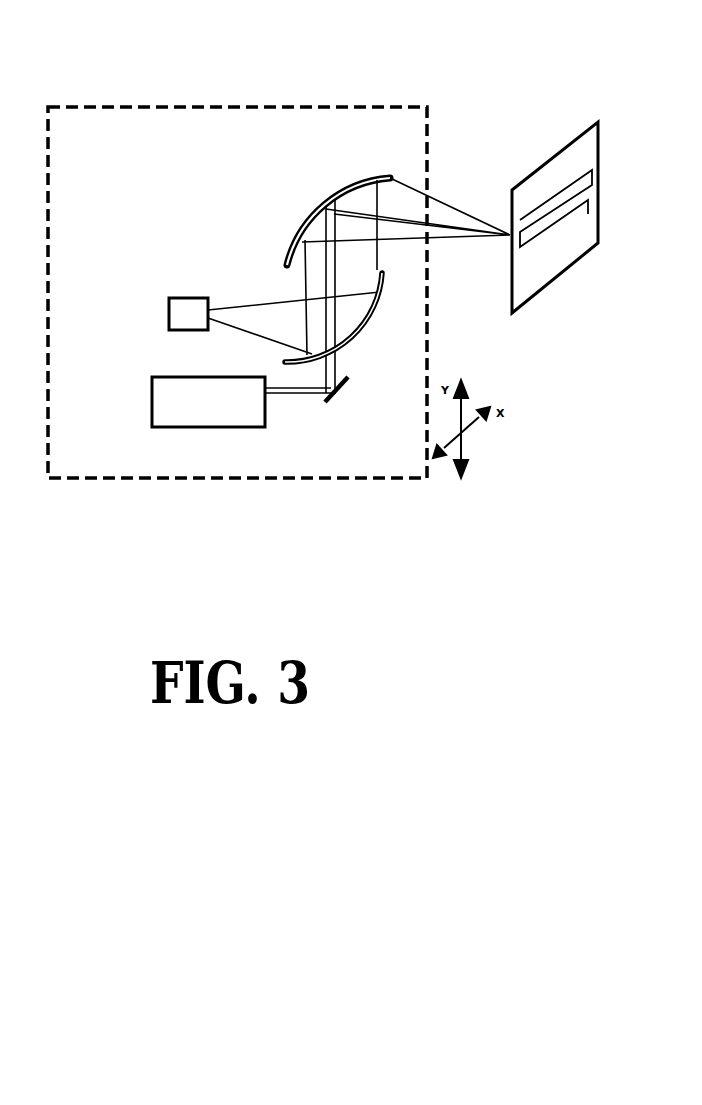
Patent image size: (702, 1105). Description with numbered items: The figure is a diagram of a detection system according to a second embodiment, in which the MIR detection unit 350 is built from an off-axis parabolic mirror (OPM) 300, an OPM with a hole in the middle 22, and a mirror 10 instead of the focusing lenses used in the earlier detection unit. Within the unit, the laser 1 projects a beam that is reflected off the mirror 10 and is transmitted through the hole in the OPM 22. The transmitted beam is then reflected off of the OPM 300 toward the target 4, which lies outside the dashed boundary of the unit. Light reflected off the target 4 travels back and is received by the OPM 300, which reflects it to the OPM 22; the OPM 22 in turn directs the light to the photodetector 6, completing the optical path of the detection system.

The MIR detection unit 350 is at (343, 106).
The off-axis parabolic mirror 300 is at (388, 178).
The target 4 is at (555, 217).
The photodetector 6 is at (188, 314).
The laser 1 is at (208, 402).
The OPM with a hole in the middle 22 is at (367, 319).
The mirror 10 is at (341, 393).